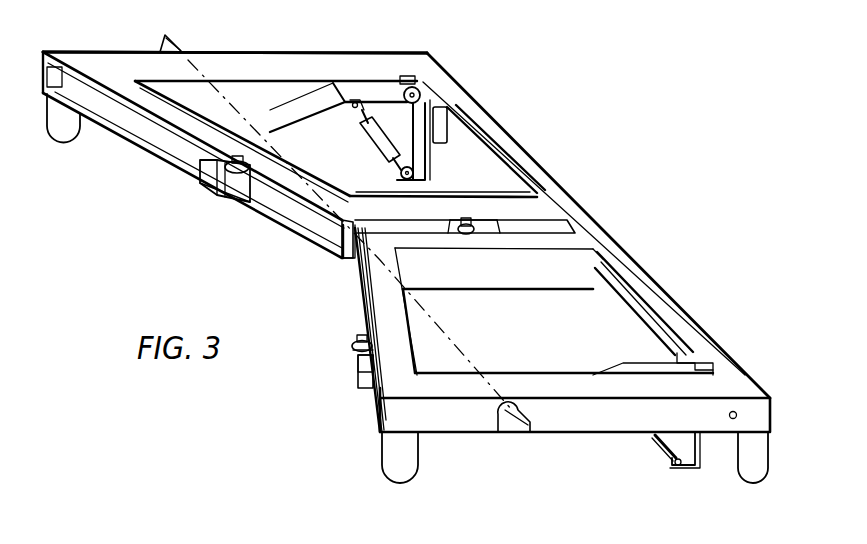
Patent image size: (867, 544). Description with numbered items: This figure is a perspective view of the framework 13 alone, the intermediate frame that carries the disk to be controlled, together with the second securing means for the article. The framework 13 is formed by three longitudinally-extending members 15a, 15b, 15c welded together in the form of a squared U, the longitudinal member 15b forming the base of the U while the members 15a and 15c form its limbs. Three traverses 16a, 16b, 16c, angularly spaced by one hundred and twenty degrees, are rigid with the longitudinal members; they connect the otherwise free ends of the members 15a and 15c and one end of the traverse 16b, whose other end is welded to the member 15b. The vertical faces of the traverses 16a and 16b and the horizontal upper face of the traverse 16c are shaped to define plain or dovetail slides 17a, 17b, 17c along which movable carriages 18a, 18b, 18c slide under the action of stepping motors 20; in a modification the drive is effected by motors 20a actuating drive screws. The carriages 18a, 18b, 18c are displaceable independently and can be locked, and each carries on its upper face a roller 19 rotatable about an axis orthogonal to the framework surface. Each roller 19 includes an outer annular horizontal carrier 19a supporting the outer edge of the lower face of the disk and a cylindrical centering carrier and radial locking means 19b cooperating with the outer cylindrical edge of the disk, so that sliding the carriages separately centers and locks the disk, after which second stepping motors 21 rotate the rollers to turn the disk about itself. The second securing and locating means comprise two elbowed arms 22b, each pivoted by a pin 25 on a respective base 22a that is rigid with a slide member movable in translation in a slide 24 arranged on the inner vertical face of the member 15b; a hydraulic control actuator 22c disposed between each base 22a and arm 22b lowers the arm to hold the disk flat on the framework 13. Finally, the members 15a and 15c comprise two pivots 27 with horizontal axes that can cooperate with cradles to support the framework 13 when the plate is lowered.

The framework 13 is at (612, 180).
The longitudinally-extending member 15a is at (593, 424).
The longitudinally-extending member 15b is at (470, 107).
The longitudinally-extending member 15c is at (266, 62).
The traverse 16a is at (368, 297).
The traverse 16b is at (535, 213).
The traverse 16c is at (167, 110).
The slide 17a is at (353, 315).
The slide 17b is at (345, 250).
The slide 17c is at (290, 223).
The movable carriage 18a is at (304, 418).
The movable carriage 18b is at (532, 315).
The movable carriage 18c is at (200, 257).
The roller 19 is at (202, 156).
The outer annular horizontal carrier 19a is at (357, 357).
The cylindrical centering carrier and radial locking means 19b is at (352, 334).
The stepping motor 20 is at (205, 190).
The motor 20a is at (72, 133).
The second stepping motor 21 is at (232, 202).
The base 22a is at (430, 163).
The elbowed arm 22b is at (327, 100).
The control actuator 22c is at (372, 135).
The slide 24 is at (503, 182).
The pin 25 is at (410, 87).
The pivot 27 is at (172, 50).